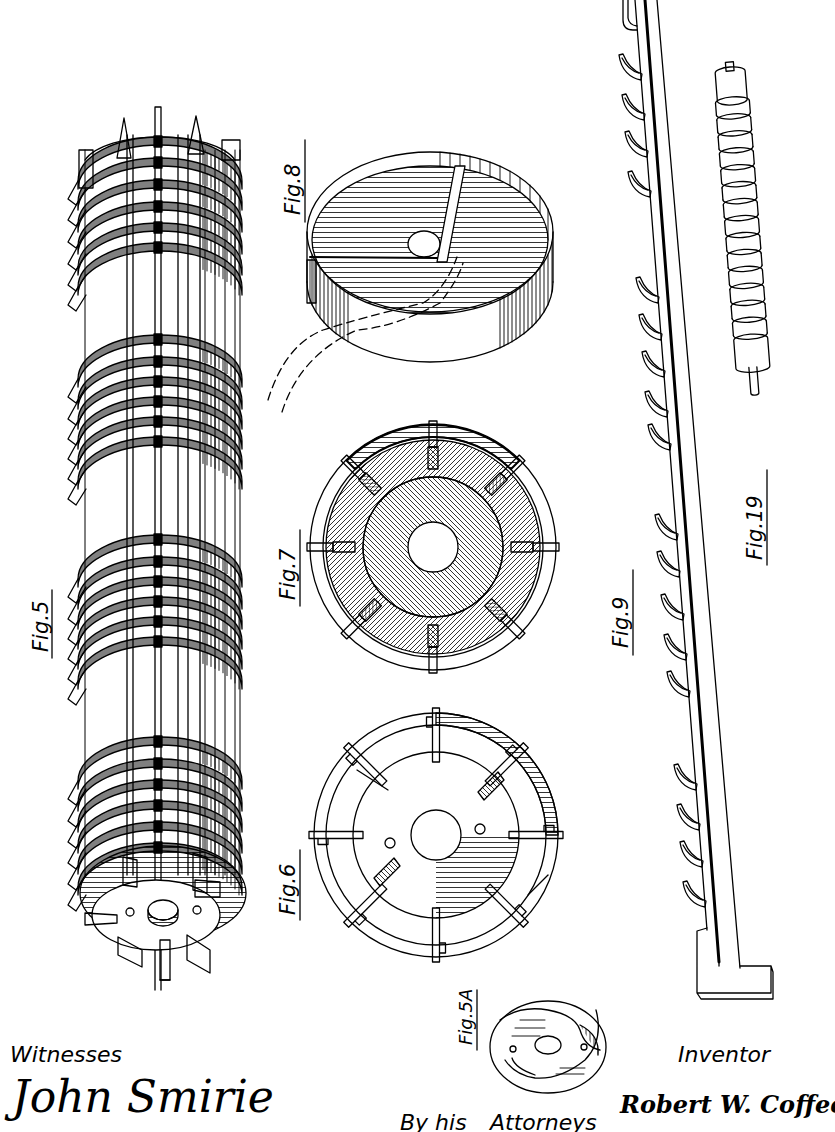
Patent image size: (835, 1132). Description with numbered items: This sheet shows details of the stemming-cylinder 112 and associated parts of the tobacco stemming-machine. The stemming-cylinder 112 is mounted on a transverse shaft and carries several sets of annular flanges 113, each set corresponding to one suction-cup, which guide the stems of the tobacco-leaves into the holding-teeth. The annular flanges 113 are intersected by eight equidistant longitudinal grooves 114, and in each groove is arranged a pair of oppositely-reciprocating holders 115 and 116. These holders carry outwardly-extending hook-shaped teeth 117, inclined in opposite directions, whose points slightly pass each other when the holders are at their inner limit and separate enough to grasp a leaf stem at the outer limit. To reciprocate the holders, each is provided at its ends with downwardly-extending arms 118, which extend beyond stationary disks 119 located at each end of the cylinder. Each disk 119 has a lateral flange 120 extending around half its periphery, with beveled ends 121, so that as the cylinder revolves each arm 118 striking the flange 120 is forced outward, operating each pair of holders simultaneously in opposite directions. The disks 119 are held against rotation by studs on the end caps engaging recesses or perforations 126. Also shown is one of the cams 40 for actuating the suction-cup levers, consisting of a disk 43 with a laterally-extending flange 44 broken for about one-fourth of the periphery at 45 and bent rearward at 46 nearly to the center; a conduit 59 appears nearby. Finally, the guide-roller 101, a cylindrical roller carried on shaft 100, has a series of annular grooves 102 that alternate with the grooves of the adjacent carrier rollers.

In FIG. 8, the cam 40 is at (430, 252).
In FIG. 8, the disk 43 is at (430, 240).
In FIG. 8, the laterally-extending flange 44 is at (403, 272).
In FIG. 8, the break in flange 45 is at (420, 160).
In FIG. 8, the rearwardly-bent flange end 46 is at (424, 232).
In FIG. 8, the conduit 59 is at (365, 334).
In FIG. 19, the shaft 100 is at (776, 392).
In FIG. 19, the cylindrical roller 101 is at (731, 274).
In FIG. 19, the annular grooves 102 is at (728, 217).
In FIG. 5, the stemming-cylinder 112 is at (86, 342).
In FIG. 7, the stemming-cylinder 112 is at (330, 603).
In FIG. 6, the stemming-cylinder 112 is at (436, 822).
In FIG. 5, the annular flanges 113 is at (88, 246).
In FIG. 7, the annular flanges 113 is at (358, 625).
In FIG. 6, the annular flanges 113 is at (357, 770).
In FIG. 5, the longitudinal grooves 114 is at (127, 743).
In FIG. 7, the longitudinal grooves 114 is at (430, 668).
In FIG. 6, the longitudinal grooves 114 is at (433, 725).
In FIG. 5, the holder 115 is at (118, 275).
In FIG. 7, the holder 115 is at (433, 547).
In FIG. 6, the holder 115 is at (424, 835).
In FIG. 5, the holder 116 is at (147, 468).
In FIG. 7, the holder 116 is at (426, 547).
In FIG. 6, the holder 116 is at (360, 780).
In FIG. 5, the hook-shaped teeth 117 is at (127, 540).
In FIG. 9, the hook-shaped teeth 117 is at (683, 767).
In FIG. 5, the downwardly-extending arms 118 is at (208, 960).
In FIG. 6, the downwardly-extending arms 118 is at (373, 833).
In FIG. 9, the downwardly-extending arms 118 is at (735, 963).
In FIG. 5, the disk 119 is at (123, 950).
In FIG. 6, the disk 119 is at (435, 821).
In FIG. 5A, the disk 119 is at (548, 1036).
In FIG. 5, the lateral flange 120 is at (198, 136).
In FIG. 6, the lateral flange 120 is at (505, 872).
In FIG. 5A, the lateral flange 120 is at (603, 1053).
In FIG. 5, the beveled ends 121 is at (158, 953).
In FIG. 6, the beveled ends 121 is at (460, 768).
In FIG. 5A, the beveled ends 121 is at (570, 1010).
In FIG. 5, the recesses or perforations 126 is at (112, 928).
In FIG. 5A, the recesses or perforations 126 is at (515, 1053).